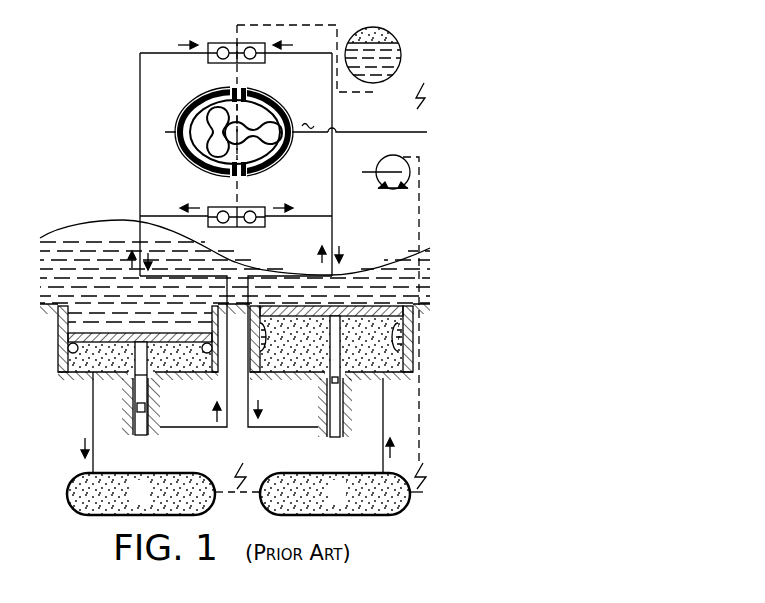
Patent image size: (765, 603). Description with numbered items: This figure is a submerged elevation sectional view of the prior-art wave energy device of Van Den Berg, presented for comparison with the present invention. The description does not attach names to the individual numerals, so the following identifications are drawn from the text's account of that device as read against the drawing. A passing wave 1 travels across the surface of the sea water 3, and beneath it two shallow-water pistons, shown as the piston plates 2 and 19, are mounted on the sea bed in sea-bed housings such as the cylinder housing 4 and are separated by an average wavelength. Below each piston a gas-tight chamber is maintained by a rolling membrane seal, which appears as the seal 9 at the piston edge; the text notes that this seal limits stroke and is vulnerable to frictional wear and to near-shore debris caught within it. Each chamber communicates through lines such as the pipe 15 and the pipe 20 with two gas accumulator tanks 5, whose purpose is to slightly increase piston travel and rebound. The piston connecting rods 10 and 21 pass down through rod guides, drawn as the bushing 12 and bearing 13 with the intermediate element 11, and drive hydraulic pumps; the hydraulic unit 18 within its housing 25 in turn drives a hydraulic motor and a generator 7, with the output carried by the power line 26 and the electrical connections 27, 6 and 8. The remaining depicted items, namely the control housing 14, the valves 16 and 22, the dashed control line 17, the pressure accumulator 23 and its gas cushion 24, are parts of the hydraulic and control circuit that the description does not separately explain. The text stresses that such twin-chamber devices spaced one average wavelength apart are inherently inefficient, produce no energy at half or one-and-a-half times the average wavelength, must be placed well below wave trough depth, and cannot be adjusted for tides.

The wave 1 is at (118, 220).
The piston plate 2 is at (168, 333).
The water body 3 is at (70, 240).
The cylinder housing 4 is at (58, 369).
The storage tank 5 is at (238, 494).
The electrical connection 6 is at (428, 475).
The generator 7 is at (390, 160).
The electrical connection 8 is at (245, 468).
The seal 9 is at (136, 353).
The piston rod 10 is at (133, 393).
The valve 11 is at (147, 409).
The guide bushing 12 is at (127, 428).
The guide bearing 13 is at (146, 440).
The control housing 14 is at (140, 125).
The pipe 15 is at (143, 216).
The valve 16 is at (219, 43).
The control line 17 is at (238, 72).
The hydraulic pump 18 is at (278, 106).
The piston plate 19 is at (360, 308).
The pipe 20 is at (373, 268).
The piston rod 21 is at (341, 410).
The valve 22 is at (256, 207).
The pressure accumulator 23 is at (392, 60).
The gas cushion 24 is at (372, 28).
The pump housing 25 is at (190, 105).
The power line 26 is at (358, 132).
The electrical connection 27 is at (404, 132).